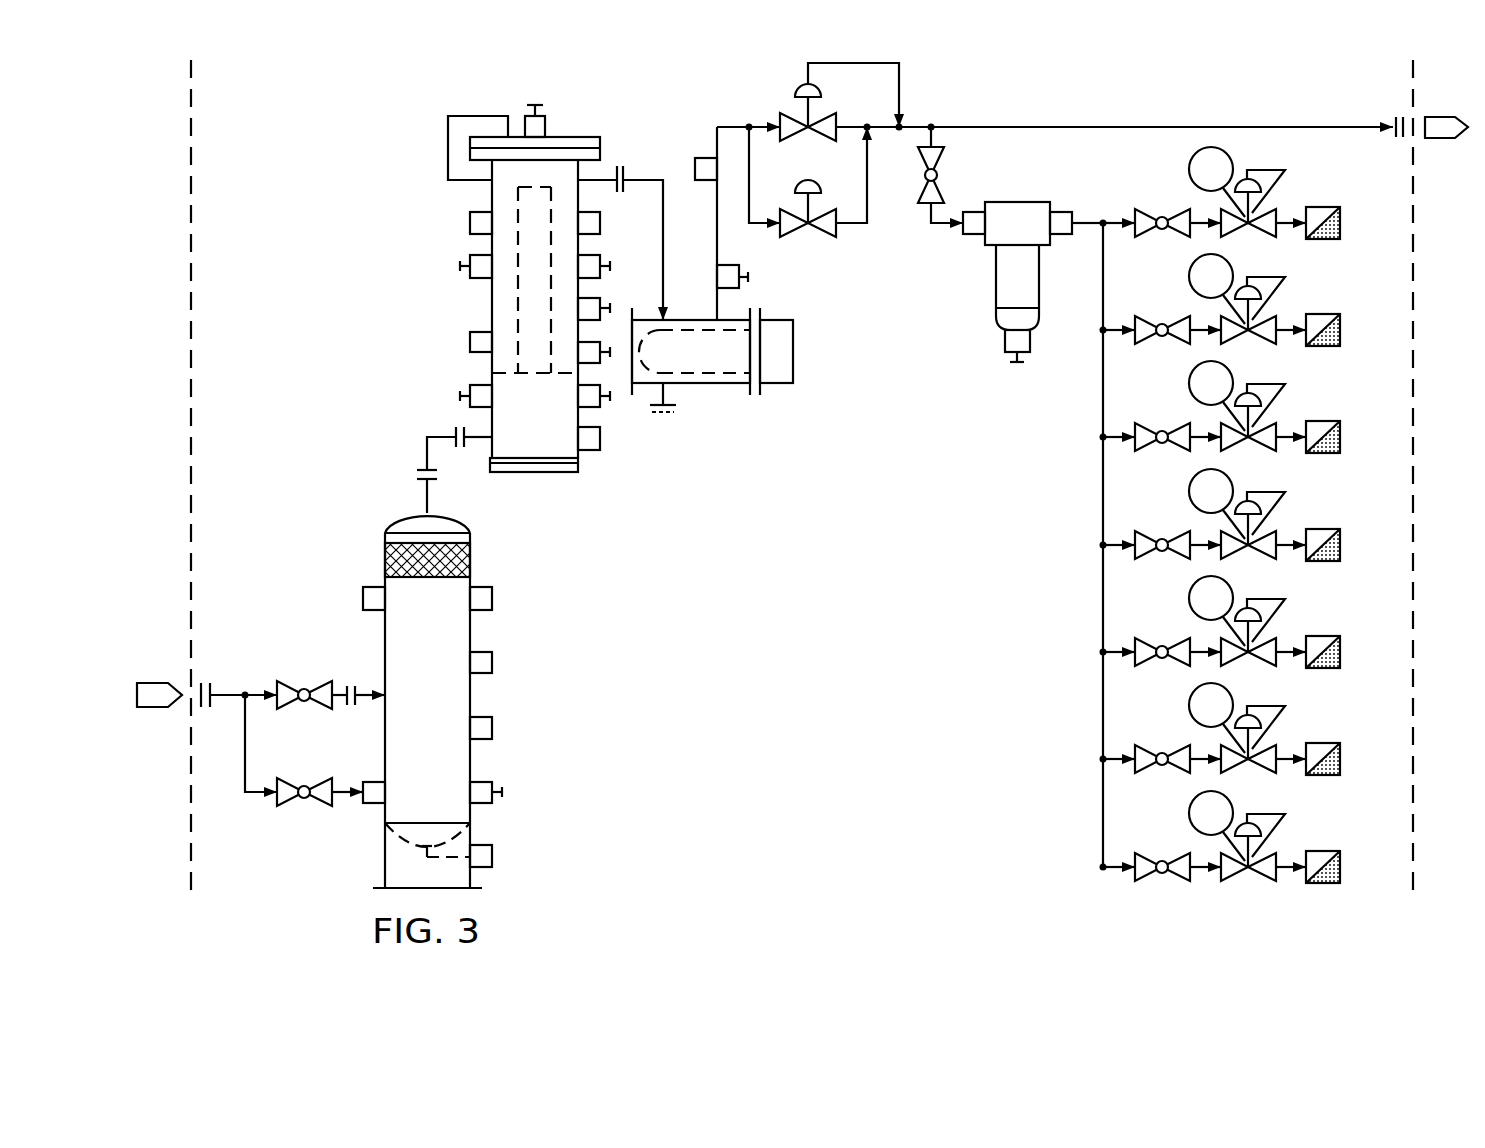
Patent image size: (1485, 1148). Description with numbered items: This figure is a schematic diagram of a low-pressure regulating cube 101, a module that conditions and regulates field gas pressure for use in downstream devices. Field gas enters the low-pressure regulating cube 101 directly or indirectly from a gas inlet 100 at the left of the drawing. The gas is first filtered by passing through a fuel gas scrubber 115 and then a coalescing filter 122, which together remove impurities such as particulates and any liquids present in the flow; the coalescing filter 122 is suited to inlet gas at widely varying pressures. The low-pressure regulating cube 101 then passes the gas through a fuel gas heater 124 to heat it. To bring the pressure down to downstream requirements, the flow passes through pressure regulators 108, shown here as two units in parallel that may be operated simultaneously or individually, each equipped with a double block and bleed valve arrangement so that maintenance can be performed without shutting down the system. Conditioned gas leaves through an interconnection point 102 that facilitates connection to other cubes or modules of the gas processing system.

The gas inlet 100 is at (152, 708).
The low-pressure regulating cube 101 is at (398, 118).
The interconnection points 102 is at (1437, 116).
The pressure regulator 108 is at (797, 113).
The fuel gas scrubber 115 is at (447, 710).
The coalescing filter 122 is at (533, 472).
The fuel gas heater 124 is at (793, 350).